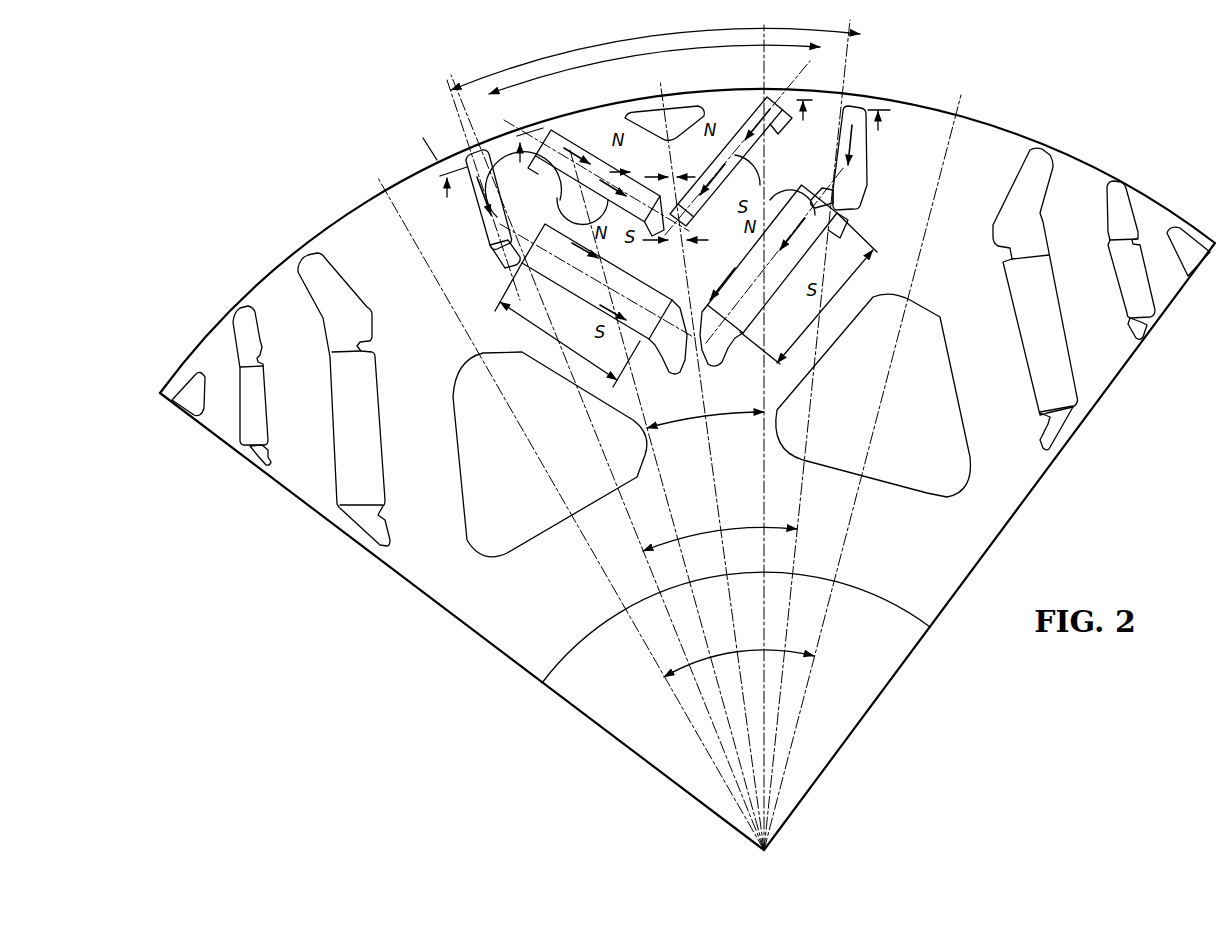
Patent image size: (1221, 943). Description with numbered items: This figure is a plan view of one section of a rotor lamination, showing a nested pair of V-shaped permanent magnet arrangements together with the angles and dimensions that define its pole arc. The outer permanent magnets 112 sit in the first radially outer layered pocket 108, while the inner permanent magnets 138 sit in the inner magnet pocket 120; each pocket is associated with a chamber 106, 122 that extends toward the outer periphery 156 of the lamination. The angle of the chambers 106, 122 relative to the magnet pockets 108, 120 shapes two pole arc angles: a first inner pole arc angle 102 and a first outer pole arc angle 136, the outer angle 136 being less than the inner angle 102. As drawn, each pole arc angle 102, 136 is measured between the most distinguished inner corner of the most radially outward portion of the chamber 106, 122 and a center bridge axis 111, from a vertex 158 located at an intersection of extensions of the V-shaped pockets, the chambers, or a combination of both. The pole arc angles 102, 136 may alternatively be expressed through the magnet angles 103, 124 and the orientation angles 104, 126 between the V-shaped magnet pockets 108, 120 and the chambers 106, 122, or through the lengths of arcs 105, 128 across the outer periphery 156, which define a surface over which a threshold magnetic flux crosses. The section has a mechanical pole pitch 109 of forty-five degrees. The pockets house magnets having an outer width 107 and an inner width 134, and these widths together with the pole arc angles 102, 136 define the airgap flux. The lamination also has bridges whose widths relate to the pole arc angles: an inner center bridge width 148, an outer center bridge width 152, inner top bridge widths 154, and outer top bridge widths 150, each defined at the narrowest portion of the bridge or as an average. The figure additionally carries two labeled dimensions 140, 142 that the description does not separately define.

The first inner pole arc angle 102 is at (793, 533).
The magnet angle 103 is at (688, 388).
The orientation angle 104 is at (474, 212).
The arc 105 is at (508, 115).
The chamber 106 is at (426, 256).
The outer magnet width 107 is at (545, 338).
The first radially outer layered pocket 108 is at (773, 313).
The mechanical pole pitch 109 is at (808, 658).
The center bridge axis 111 is at (718, 495).
The permanent magnet 112 is at (527, 288).
The magnet pocket 120 is at (576, 188).
The chamber 122 is at (480, 152).
The magnet angle 124 is at (674, 176).
The orientation angle 126 is at (622, 118).
The arc 128 is at (560, 54).
The inner magnet width 134 is at (550, 220).
The first outer pole arc angle 136 is at (714, 412).
The permanent magnet 138 is at (645, 180).
The bridge thickness 140 is at (460, 151).
The outer bridge 142 is at (543, 126).
The inner center bridge width 148 is at (714, 383).
The outer top bridge width 150 is at (435, 158).
The outer center bridge width 152 is at (680, 244).
The inner top bridge width 154 is at (513, 125).
The outer periphery 156 is at (928, 97).
The vertex 158 is at (670, 245).